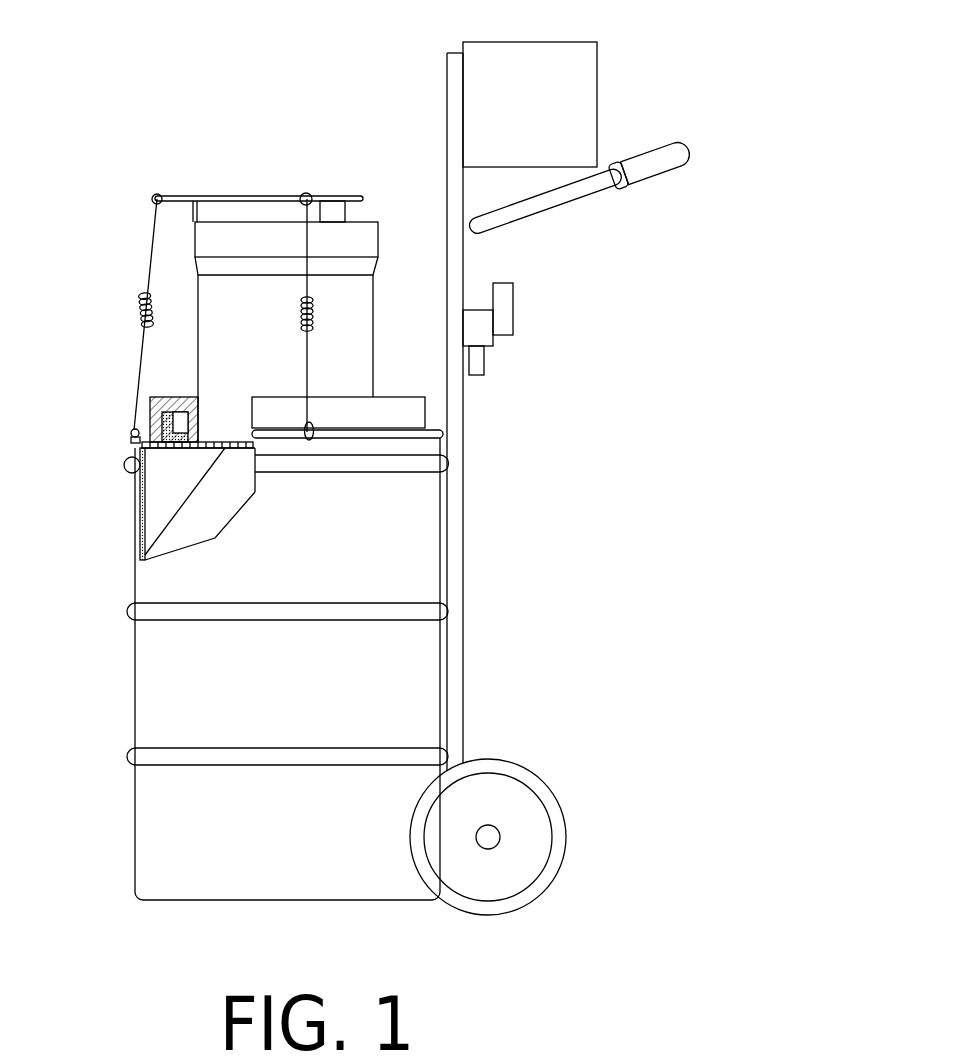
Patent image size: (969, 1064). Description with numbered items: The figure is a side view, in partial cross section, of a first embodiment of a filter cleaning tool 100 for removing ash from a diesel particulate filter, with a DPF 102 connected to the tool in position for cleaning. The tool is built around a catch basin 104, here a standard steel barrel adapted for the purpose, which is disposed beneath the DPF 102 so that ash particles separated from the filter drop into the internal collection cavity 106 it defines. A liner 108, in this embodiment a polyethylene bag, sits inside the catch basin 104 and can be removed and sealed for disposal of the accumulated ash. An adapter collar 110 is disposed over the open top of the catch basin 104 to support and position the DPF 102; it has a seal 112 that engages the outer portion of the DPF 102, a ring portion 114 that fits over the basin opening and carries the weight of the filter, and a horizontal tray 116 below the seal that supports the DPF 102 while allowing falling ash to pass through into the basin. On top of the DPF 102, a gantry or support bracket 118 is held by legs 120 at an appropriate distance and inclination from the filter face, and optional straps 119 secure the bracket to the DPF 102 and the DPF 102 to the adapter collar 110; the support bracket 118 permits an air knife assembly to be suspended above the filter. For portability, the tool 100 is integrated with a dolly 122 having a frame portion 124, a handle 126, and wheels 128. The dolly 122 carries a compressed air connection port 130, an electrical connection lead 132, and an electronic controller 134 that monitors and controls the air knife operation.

The filter cleaning tool 100 is at (430, 475).
The DPF 102 is at (316, 278).
The catch basin 104 is at (153, 693).
The internal collection cavity 106 is at (140, 487).
The liner 108 is at (124, 516).
The adapter collar 110 is at (398, 412).
The seal 112 is at (190, 403).
The ring portion 114 is at (130, 443).
The horizontal tray 116 is at (225, 448).
The support bracket 118 is at (160, 195).
The straps 119 is at (303, 343).
The legs 120 is at (333, 210).
The dolly 122 is at (594, 475).
The frame portion 124 is at (458, 555).
The handle 126 is at (672, 155).
The wheels 128 is at (537, 822).
The compressed air connection port 130 is at (480, 360).
The electrical connection lead 132 is at (503, 301).
The electronic controller 134 is at (577, 88).